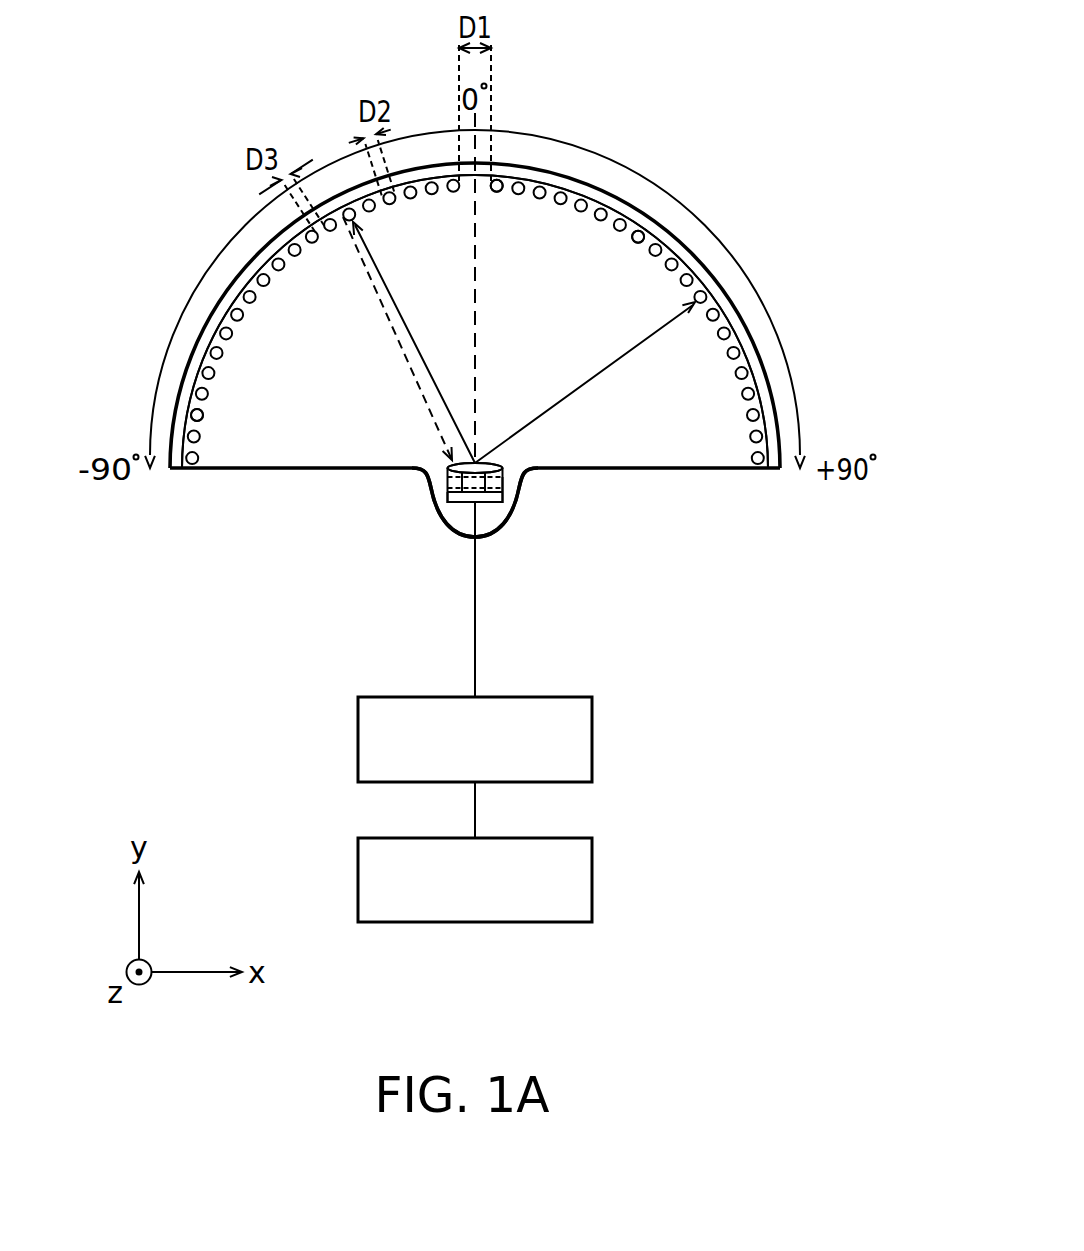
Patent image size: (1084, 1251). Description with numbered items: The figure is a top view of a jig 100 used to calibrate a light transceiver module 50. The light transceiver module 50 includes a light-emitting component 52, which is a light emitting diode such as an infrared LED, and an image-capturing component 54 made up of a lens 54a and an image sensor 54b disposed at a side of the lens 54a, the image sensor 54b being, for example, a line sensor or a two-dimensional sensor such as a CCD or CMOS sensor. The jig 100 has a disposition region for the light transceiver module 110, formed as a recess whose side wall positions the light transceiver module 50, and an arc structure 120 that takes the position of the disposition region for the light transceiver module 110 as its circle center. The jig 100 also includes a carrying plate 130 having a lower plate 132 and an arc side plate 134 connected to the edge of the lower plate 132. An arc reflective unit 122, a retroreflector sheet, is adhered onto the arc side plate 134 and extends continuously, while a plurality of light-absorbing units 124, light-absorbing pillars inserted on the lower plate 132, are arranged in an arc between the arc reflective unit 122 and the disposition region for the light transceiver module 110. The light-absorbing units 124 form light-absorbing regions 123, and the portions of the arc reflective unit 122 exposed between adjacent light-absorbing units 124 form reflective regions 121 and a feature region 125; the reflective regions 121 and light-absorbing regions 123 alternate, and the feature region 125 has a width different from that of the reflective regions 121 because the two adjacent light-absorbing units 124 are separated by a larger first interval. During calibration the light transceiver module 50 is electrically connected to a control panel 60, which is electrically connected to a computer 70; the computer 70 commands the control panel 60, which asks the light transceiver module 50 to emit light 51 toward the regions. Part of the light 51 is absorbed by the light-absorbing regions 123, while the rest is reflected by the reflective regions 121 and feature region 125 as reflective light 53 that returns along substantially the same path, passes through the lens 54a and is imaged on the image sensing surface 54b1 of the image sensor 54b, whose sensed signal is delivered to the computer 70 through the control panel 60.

The jig 100 is at (745, 517).
The disposition region for the light transceiver module 110 is at (500, 510).
The arc structure 120 is at (541, 315).
The reflective regions 121 is at (574, 209).
The arc reflective unit 122 is at (200, 368).
The light-absorbing regions 123 is at (497, 194).
The light-absorbing units 124 is at (200, 420).
The feature region 125 is at (469, 187).
The carrying plate 130 is at (541, 315).
The lower plate 132 is at (677, 353).
The arc side plate 134 is at (724, 294).
The light transceiver module 50 is at (512, 453).
The light 51 is at (445, 397).
The light-emitting component 52 is at (456, 446).
The reflective light 53 is at (373, 293).
The image-capturing component 54 is at (493, 576).
The lens 54a is at (455, 482).
The image sensor 54b is at (458, 497).
The image sensing surface 54b1 is at (505, 481).
The control panel 60 is at (560, 696).
The computer 70 is at (560, 837).